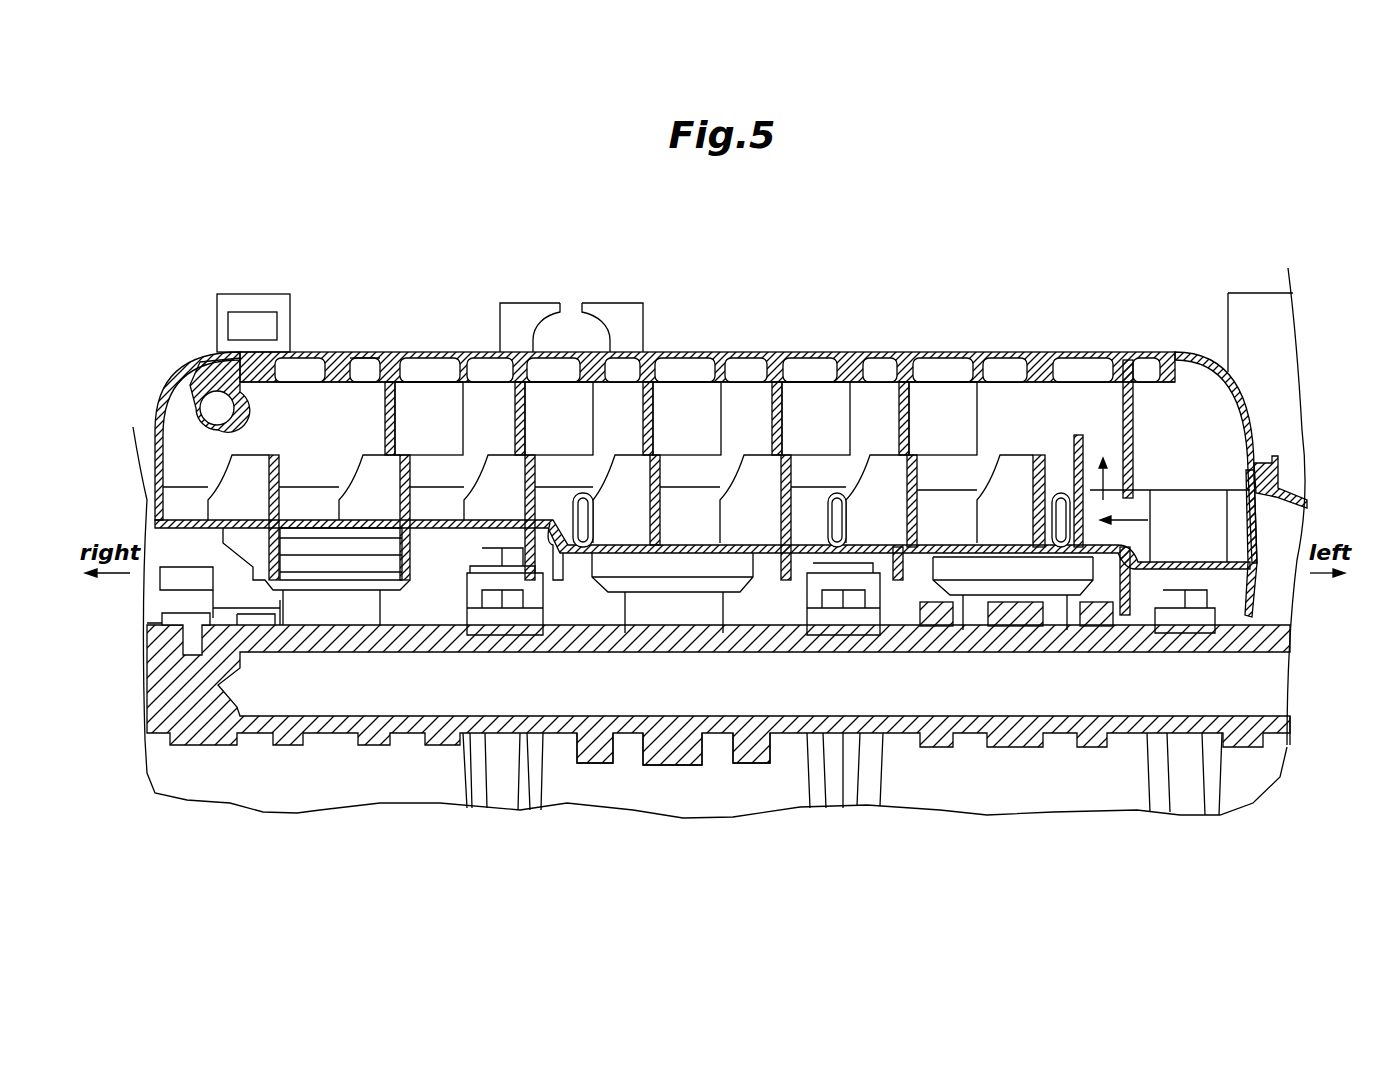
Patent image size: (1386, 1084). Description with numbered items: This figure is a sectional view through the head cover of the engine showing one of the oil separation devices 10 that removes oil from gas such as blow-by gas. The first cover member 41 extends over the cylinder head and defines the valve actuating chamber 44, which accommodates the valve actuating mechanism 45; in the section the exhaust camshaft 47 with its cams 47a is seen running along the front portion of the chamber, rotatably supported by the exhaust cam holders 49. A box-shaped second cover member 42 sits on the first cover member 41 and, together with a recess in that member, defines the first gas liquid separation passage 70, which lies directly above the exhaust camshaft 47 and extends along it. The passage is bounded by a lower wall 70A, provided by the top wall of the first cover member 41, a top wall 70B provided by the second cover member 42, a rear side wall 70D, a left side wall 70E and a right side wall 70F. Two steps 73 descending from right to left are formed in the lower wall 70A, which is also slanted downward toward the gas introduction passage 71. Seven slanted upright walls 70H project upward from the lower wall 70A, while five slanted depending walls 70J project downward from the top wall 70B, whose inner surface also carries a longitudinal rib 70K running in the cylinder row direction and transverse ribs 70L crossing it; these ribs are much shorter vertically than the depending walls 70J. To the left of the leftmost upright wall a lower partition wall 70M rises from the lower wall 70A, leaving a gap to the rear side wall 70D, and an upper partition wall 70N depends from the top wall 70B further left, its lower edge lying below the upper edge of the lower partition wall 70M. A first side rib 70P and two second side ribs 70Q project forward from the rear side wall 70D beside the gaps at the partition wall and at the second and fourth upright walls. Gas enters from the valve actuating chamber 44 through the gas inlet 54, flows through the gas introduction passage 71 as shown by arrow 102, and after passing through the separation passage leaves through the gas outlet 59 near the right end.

The oil separation device 10 is at (978, 343).
The first cover member 41 is at (160, 517).
The second cover member 42 is at (222, 392).
The valve actuating chamber 44 is at (703, 805).
The valve actuating mechanism 45 is at (1298, 645).
The exhaust camshaft 47 is at (1280, 735).
The cams 47a is at (400, 748).
The exhaust cam holder 49 is at (497, 800).
The gas inlet 54 is at (1240, 545).
The gas outlet 59 is at (205, 372).
The first gas liquid separation passage 70 is at (721, 552).
The lower wall 70A is at (718, 530).
The top wall 70B is at (775, 352).
The rear side wall 70D is at (1178, 405).
The left side wall 70E is at (1250, 432).
The right side wall 70F is at (160, 420).
The slanted upright wall 70H is at (418, 430).
The slanted depending wall 70J is at (390, 400).
The longitudinal rib 70K is at (305, 360).
The transverse rib 70L is at (355, 378).
The lower partition wall 70M is at (1097, 503).
The upper partition wall 70N is at (1118, 395).
The first side rib 70P is at (1063, 493).
The second side rib 70Q is at (582, 493).
The gas introduction passage 71 is at (1172, 533).
The step 73 is at (557, 478).
The arrow 102 is at (1108, 478).